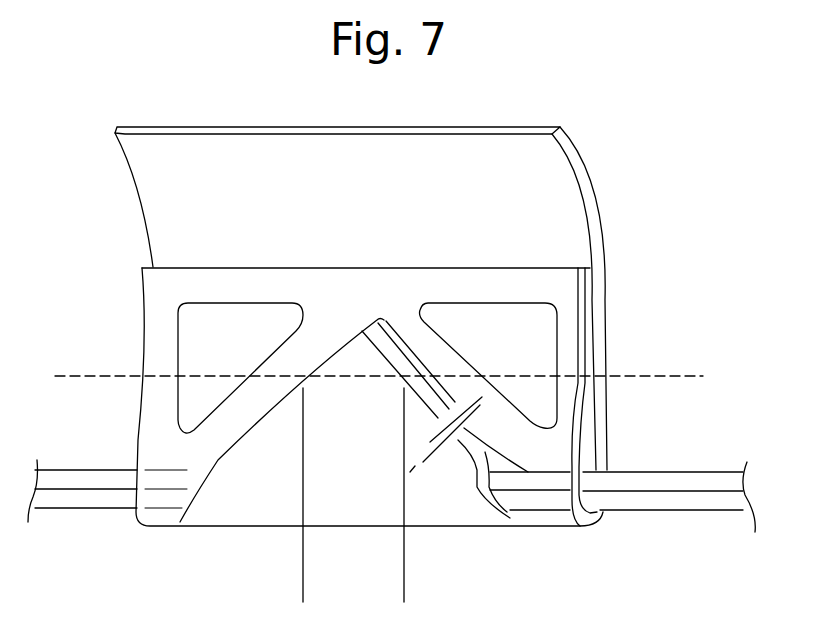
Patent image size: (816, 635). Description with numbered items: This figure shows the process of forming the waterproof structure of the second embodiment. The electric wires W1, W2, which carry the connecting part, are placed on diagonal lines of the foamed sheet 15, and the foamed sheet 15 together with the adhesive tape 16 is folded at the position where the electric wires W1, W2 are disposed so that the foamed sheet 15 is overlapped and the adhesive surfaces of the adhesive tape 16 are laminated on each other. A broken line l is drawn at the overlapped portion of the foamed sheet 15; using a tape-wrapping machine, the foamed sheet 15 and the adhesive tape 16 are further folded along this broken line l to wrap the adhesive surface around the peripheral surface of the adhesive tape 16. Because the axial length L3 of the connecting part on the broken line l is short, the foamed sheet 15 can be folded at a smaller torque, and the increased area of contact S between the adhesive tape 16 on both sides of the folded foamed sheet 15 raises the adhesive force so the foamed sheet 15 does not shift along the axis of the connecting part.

The adhesive tape 16 is at (552, 190).
The foamed sheet 15 is at (253, 502).
The area of contact S is at (202, 333).
The electric wire W1 is at (82, 477).
The electric wire W2 is at (95, 500).
The axial length of the connecting part L3 is at (392, 598).
The broken line l is at (388, 375).